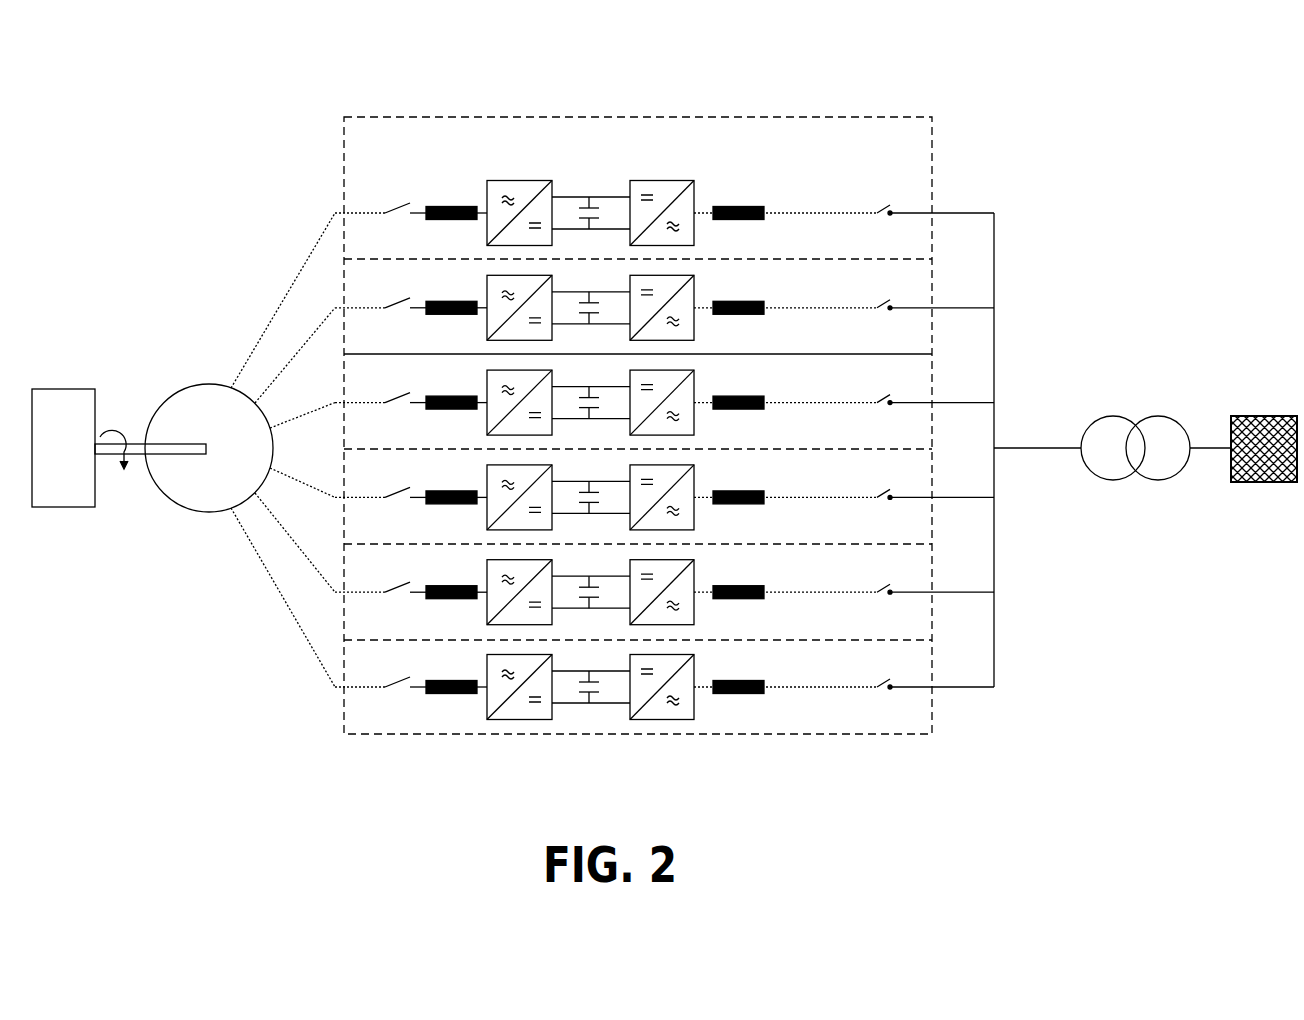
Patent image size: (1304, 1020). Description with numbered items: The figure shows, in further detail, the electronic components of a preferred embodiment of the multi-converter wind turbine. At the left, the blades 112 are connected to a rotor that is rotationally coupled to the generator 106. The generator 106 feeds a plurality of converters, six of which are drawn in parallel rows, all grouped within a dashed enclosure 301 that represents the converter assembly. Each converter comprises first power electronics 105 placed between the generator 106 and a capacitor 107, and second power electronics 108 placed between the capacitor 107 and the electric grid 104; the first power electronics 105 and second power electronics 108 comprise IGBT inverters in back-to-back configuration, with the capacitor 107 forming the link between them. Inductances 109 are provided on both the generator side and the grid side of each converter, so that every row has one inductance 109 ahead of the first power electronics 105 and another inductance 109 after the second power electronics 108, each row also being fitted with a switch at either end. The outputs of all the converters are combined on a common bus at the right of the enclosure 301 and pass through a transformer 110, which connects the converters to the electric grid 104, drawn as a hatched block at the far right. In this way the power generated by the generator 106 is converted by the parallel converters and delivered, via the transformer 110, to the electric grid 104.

The electric grid 104 is at (1260, 416).
The first power electronics 105 is at (517, 154).
The generator 106 is at (167, 402).
The capacitor 107 is at (591, 146).
The second power electronics 108 is at (666, 154).
The inductances 109 is at (602, 141).
The transformer 110 is at (1108, 416).
The blades 112 is at (72, 389).
The power conversion system 301 is at (935, 152).